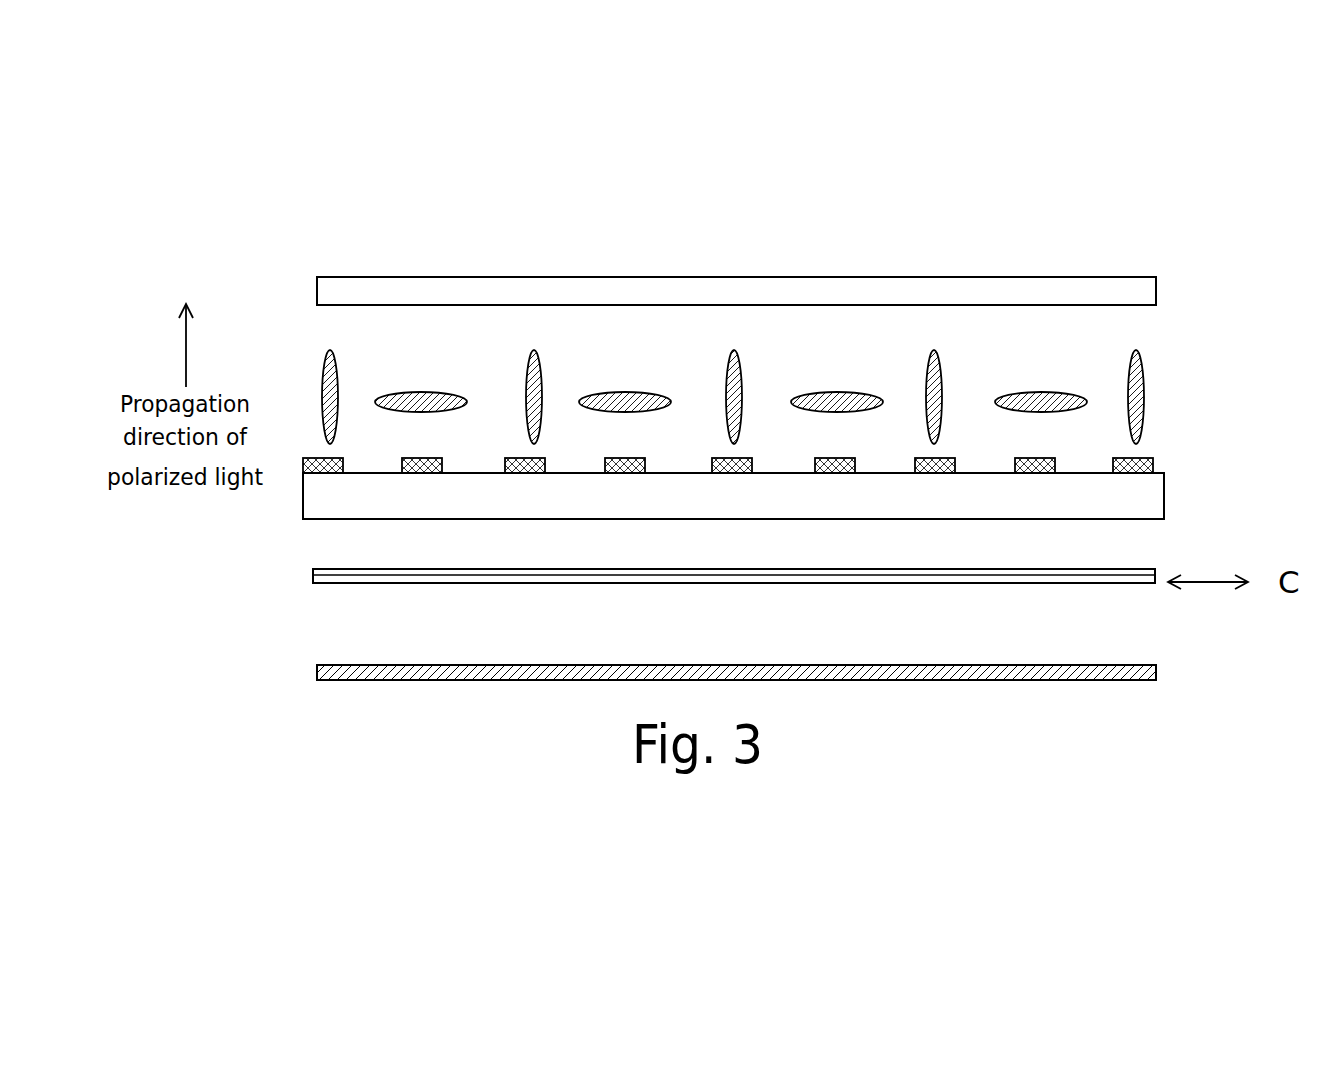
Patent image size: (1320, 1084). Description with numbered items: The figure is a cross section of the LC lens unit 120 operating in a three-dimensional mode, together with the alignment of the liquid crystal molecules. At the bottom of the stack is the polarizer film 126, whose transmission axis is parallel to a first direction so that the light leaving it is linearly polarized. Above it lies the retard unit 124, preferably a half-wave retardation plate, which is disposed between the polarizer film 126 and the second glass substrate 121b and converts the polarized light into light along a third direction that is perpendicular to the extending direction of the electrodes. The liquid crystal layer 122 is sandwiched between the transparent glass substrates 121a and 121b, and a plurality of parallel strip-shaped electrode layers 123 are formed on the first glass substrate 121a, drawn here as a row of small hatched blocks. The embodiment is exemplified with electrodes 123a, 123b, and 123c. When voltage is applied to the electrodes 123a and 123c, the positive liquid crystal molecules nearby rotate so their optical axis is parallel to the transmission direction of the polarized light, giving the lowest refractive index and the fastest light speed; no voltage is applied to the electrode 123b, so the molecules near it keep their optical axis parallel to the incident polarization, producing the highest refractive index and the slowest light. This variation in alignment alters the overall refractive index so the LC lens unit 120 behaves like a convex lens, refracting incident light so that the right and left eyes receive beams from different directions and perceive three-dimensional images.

The LC lens unit 120 is at (687, 167).
The first glass substrate 121a is at (1128, 498).
The second glass substrate 121b is at (1125, 298).
The liquid crystal layer 122 is at (1137, 388).
The strip-shaped electrode layers 123 is at (764, 486).
The electrode 123a is at (507, 465).
The electrode 123b is at (605, 463).
The electrode 123c is at (747, 467).
The retard unit 124 is at (313, 583).
The polarizer film 126 is at (317, 679).